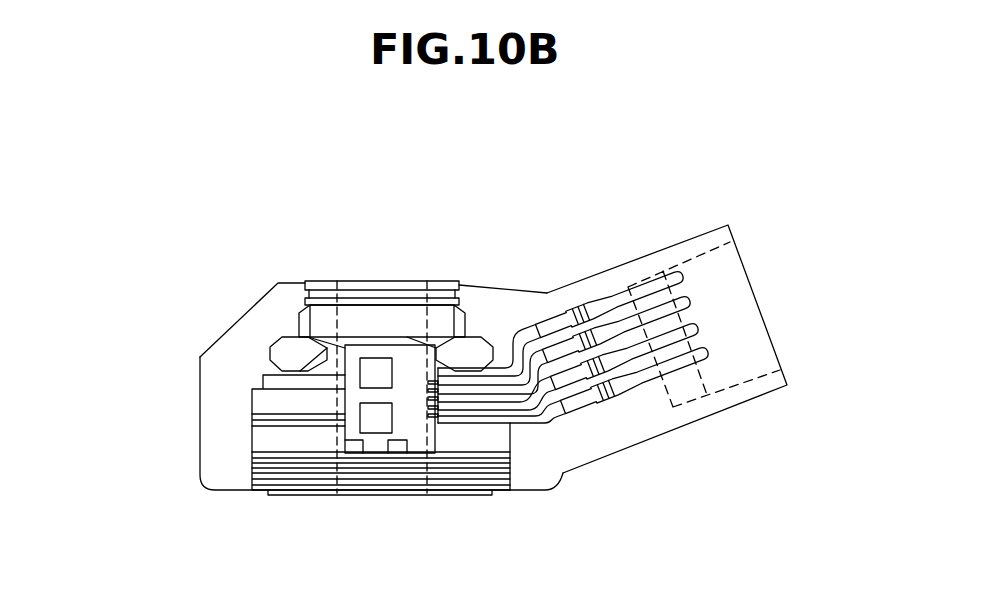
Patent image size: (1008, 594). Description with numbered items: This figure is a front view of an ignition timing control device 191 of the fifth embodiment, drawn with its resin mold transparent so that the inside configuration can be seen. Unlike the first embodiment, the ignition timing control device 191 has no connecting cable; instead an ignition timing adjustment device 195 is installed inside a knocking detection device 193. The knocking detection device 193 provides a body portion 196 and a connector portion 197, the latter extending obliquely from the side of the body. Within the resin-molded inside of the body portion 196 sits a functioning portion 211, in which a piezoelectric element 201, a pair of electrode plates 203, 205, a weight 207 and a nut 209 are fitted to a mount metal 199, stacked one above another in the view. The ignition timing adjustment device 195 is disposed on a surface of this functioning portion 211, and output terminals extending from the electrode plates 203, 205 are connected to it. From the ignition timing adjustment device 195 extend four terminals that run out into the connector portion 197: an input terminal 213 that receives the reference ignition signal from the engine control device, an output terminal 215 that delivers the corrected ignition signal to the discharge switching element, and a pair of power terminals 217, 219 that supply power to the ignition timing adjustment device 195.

The ignition timing control device 191 is at (535, 206).
The knocking detection device 193 is at (272, 320).
The ignition timing adjustment device 195 is at (407, 398).
The body portion 196 is at (218, 413).
The connector portion 197 is at (610, 287).
The mount metal 199 is at (279, 260).
The piezoelectric element 201 is at (263, 445).
The electrode plate 203 is at (290, 447).
The electrode plate 205 is at (273, 428).
The weight 207 is at (262, 403).
The nut 209 is at (280, 360).
The functioning portion 211 is at (367, 499).
The input terminal 213 is at (686, 278).
The output terminal 215 is at (694, 305).
The power terminal 217 is at (702, 329).
The power terminal 219 is at (712, 353).